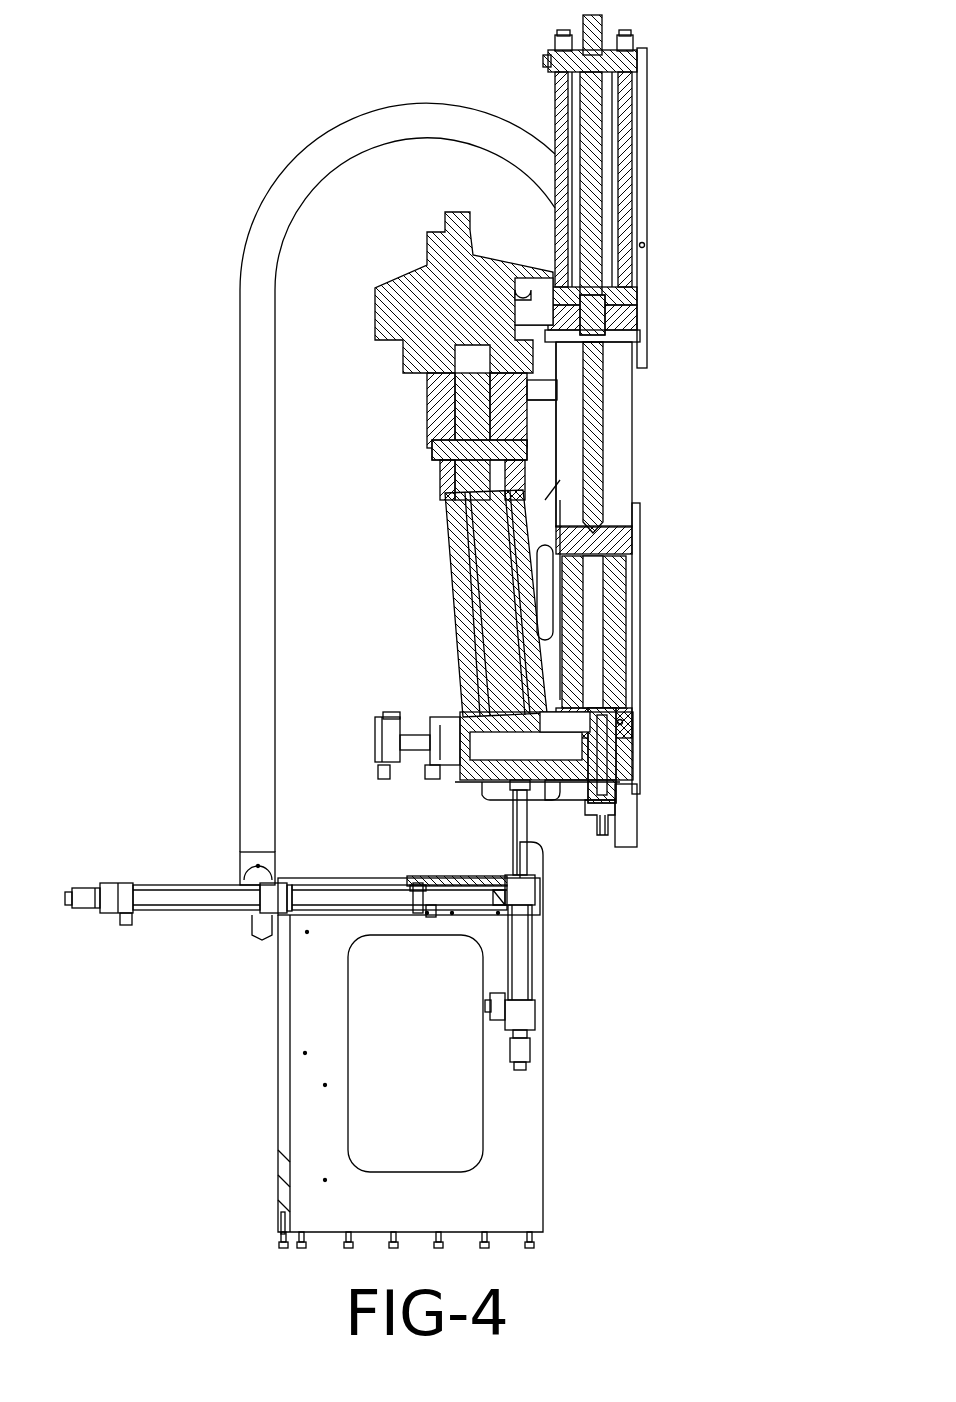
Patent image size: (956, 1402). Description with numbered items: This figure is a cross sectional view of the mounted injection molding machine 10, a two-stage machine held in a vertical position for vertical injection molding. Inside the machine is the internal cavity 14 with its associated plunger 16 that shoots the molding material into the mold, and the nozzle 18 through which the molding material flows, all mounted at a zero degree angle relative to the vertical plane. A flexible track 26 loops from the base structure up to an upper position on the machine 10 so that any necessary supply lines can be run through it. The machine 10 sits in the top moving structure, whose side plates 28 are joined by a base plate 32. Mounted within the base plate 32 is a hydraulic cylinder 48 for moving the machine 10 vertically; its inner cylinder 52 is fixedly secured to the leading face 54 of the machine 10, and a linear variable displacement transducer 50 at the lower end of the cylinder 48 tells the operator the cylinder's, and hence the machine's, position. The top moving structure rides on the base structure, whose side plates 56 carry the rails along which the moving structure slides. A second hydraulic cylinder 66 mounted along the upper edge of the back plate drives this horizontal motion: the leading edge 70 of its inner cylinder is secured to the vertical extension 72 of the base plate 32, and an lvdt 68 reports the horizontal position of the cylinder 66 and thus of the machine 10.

The injection molding machine 10 is at (511, 366).
The internal cavity 14 is at (593, 626).
The plunger 16 is at (593, 454).
The nozzle 18 is at (603, 838).
The flexible tracks 26 is at (297, 183).
The side plates 28 is at (622, 814).
The base plate 32 is at (455, 882).
The hydraulic cylinder 48 is at (522, 968).
The linear variable displacement transducer 50 is at (523, 1050).
The inner cylinder 52 is at (525, 848).
The leading face 54 is at (555, 773).
The side plates 56 is at (520, 1178).
The hydraulic cylinder 66 is at (188, 905).
The lvdt 68 is at (88, 898).
The leading edge 70 is at (430, 918).
The vertical extension 72 is at (418, 912).